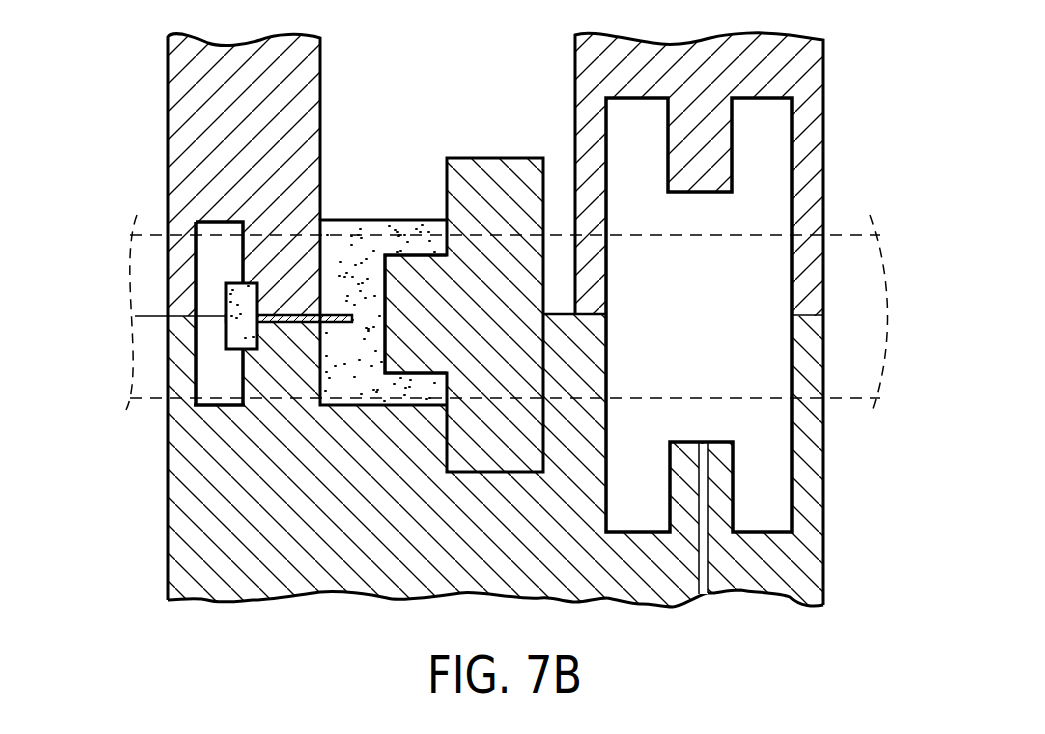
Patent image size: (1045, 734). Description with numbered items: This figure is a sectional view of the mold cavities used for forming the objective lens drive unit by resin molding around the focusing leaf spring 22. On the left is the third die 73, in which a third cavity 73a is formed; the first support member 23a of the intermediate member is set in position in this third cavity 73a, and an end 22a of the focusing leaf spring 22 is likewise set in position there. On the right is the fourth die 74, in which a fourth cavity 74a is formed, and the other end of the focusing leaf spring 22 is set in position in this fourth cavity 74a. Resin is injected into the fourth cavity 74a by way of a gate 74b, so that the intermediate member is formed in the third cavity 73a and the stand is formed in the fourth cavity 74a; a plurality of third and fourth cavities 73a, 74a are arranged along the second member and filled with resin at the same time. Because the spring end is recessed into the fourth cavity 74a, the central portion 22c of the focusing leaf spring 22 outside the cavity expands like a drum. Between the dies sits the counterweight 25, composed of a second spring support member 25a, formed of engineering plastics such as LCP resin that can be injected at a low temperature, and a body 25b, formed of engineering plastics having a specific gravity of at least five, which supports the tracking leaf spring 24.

The focusing leaf spring 22 is at (562, 237).
The end of the focusing leaf spring 22a is at (212, 402).
The central portion of the focusing leaf spring 22c is at (752, 234).
The first support member 23a is at (312, 322).
The tracking leaf spring 24 is at (257, 348).
The counterweight 25 is at (510, 453).
The second spring support member 25a is at (347, 252).
The body 25b is at (400, 270).
The third die 73 is at (320, 64).
The third cavity 73a is at (220, 408).
The fourth die 74 is at (823, 78).
The fourth cavity 74a is at (775, 167).
The gate 74b is at (705, 432).